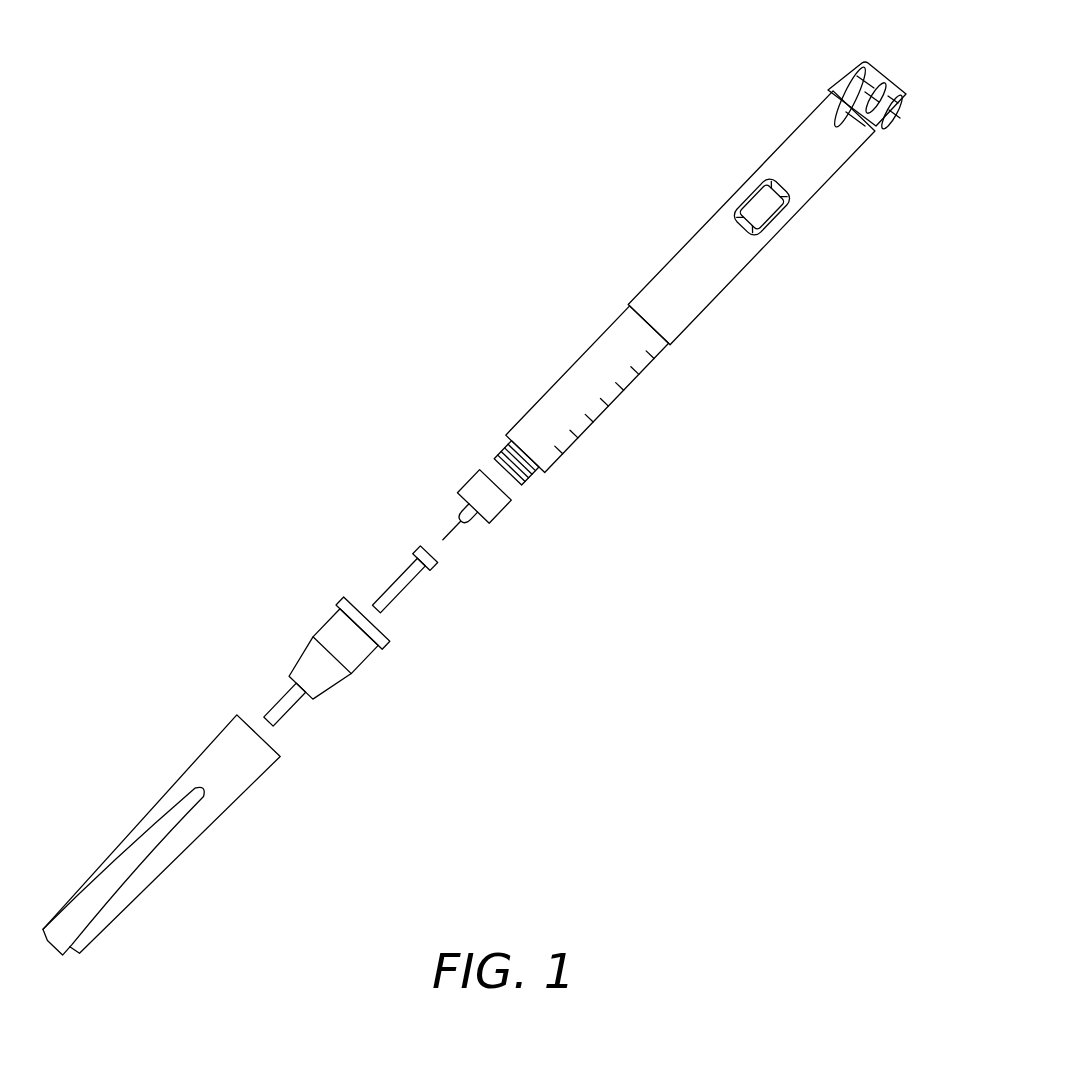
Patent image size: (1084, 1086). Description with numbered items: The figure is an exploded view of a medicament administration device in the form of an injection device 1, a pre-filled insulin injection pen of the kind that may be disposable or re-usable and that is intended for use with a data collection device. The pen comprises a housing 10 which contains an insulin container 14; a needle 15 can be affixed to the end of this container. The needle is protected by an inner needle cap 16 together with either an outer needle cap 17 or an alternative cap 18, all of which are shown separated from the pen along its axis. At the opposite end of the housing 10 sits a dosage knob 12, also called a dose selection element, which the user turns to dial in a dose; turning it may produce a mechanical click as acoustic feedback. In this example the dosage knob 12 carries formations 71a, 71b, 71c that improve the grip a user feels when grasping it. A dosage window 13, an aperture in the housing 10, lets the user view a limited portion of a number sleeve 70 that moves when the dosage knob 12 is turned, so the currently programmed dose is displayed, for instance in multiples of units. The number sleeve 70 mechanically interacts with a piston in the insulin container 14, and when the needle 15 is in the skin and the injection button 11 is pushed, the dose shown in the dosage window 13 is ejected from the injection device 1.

The injection device 1 is at (491, 489).
The housing 10 is at (751, 218).
The injection button 11 is at (883, 82).
The dosage knob 12 is at (824, 77).
The dosage window 13 is at (762, 206).
The insulin container 14 is at (578, 398).
The needle 15 is at (469, 512).
The inner needle cap 16 is at (403, 581).
The outer needle cap 17 is at (317, 670).
The alternative cap 18 is at (156, 842).
The number sleeve 70 is at (762, 207).
The formation 71a is at (885, 119).
The formation 71b is at (892, 91).
The formation 71c is at (847, 72).